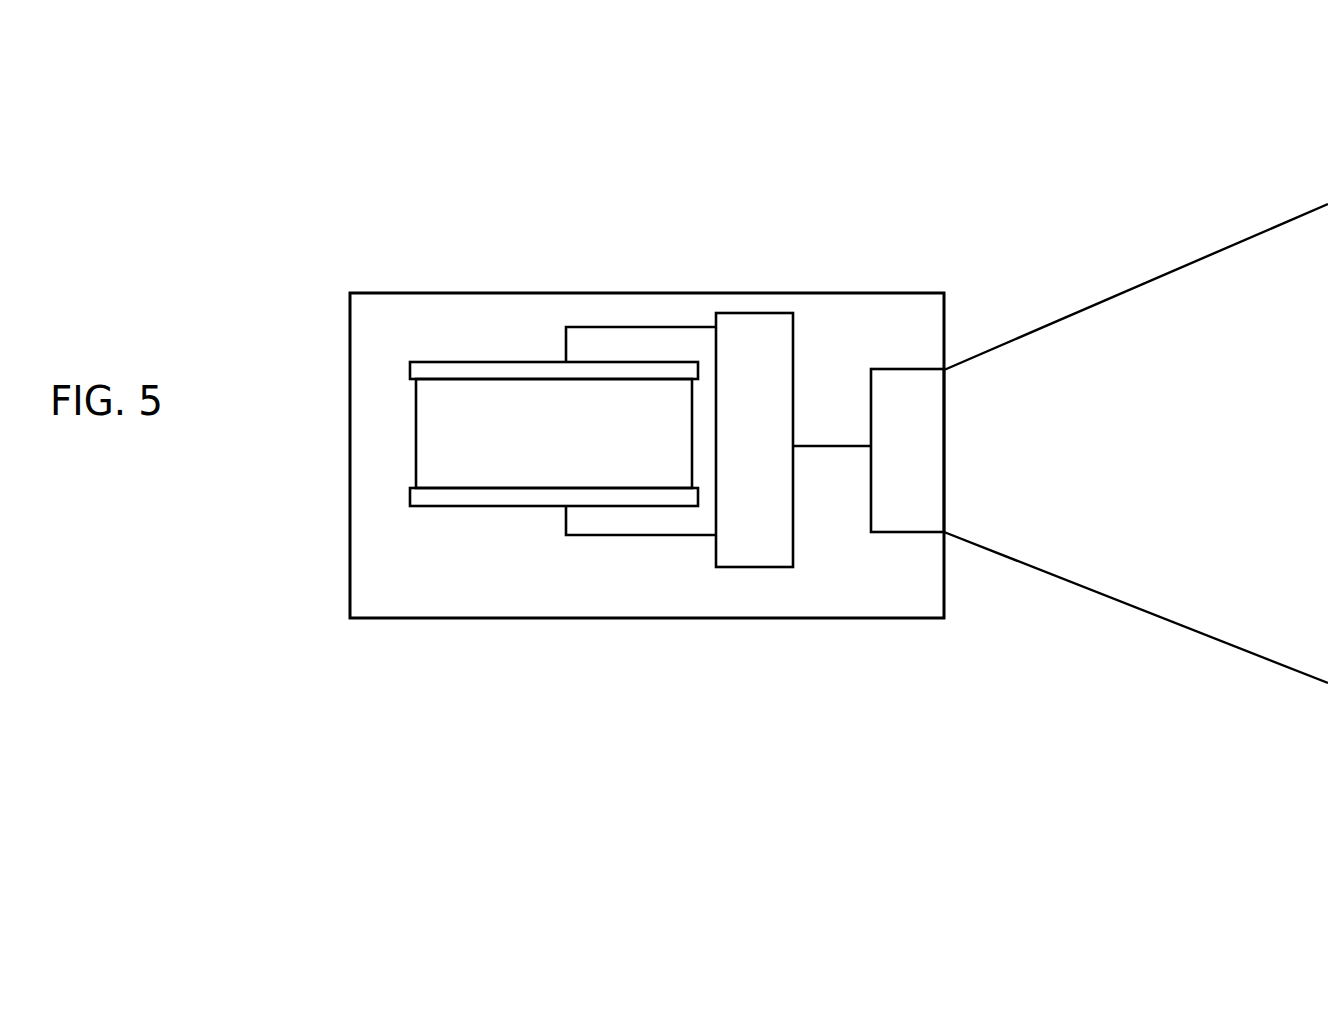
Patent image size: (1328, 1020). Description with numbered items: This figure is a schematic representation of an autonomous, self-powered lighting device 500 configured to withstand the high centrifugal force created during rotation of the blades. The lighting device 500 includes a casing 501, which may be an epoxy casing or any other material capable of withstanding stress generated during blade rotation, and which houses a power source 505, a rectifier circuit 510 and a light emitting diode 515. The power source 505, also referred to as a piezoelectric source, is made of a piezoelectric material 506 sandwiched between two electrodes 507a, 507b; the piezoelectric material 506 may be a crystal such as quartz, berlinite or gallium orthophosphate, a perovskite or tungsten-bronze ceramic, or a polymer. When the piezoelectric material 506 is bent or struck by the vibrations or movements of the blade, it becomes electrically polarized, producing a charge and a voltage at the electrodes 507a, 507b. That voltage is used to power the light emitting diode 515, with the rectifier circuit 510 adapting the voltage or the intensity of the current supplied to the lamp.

The lighting device 500 is at (829, 142).
The casing 501 is at (645, 293).
The power source 505 is at (529, 322).
The piezoelectric material 506 is at (438, 440).
The electrode 507a is at (473, 363).
The electrode 507b is at (492, 506).
The rectifier circuit 510 is at (793, 339).
The light emitting diode 515 is at (907, 532).